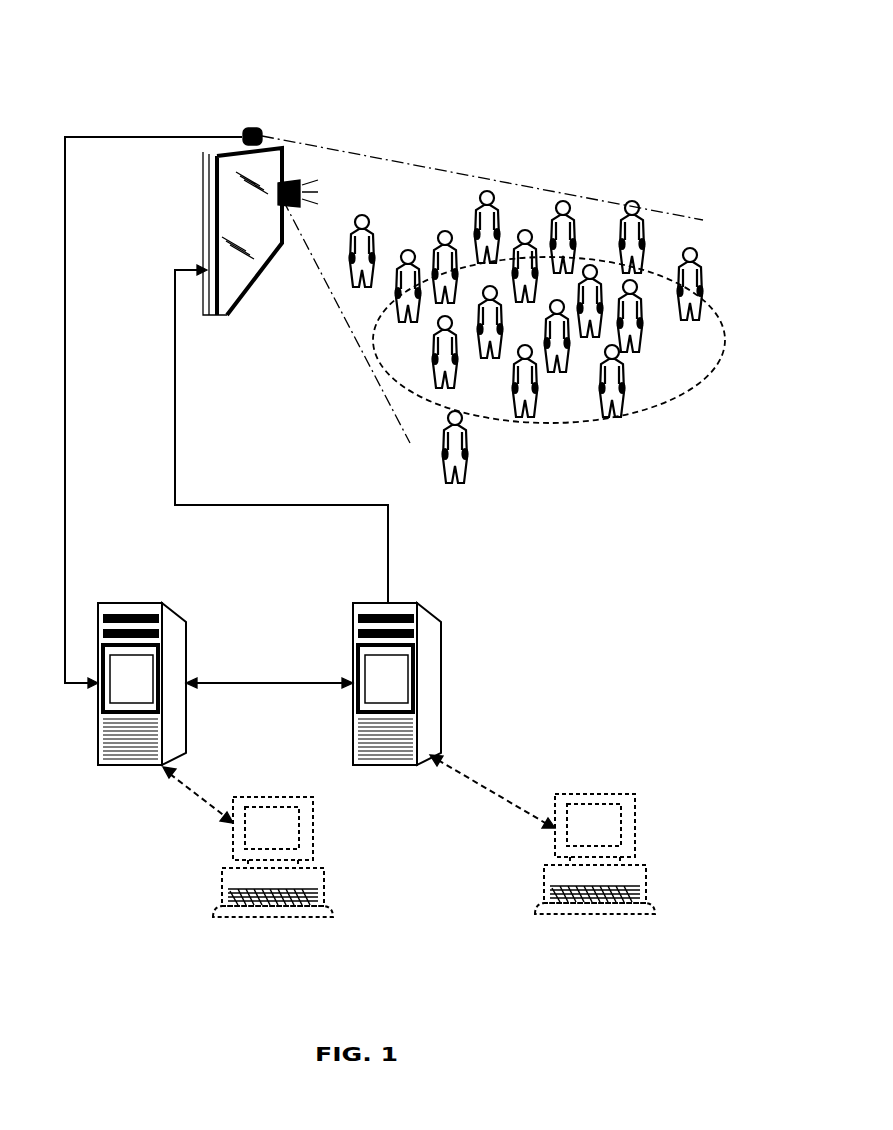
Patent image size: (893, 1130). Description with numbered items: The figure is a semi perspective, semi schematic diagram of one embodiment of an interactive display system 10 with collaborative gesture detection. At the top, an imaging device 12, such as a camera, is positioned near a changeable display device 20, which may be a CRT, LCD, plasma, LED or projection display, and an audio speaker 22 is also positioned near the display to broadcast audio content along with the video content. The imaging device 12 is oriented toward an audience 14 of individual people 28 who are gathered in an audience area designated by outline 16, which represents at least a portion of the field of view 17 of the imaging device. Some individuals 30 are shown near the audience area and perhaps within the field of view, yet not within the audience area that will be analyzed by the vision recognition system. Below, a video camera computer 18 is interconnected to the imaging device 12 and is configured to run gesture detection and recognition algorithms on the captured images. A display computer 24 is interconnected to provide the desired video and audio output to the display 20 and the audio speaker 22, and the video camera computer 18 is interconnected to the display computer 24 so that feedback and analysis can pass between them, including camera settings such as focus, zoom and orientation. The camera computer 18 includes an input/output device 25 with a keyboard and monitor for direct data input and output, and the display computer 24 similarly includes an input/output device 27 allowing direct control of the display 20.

The interactive display system 10 is at (268, 76).
The imaging device 12 is at (243, 132).
The audience 14 is at (567, 410).
The audience area 16 is at (690, 383).
The camera field of view 17 is at (407, 160).
The video camera computer 18 is at (175, 645).
The changeable display device 20 is at (232, 213).
The audio speaker 22 is at (300, 183).
The display computer 24 is at (430, 650).
The input/output device 25 is at (220, 878).
The input/output device 27 is at (612, 817).
The individual people 28 is at (632, 203).
The individuals 30 is at (372, 235).